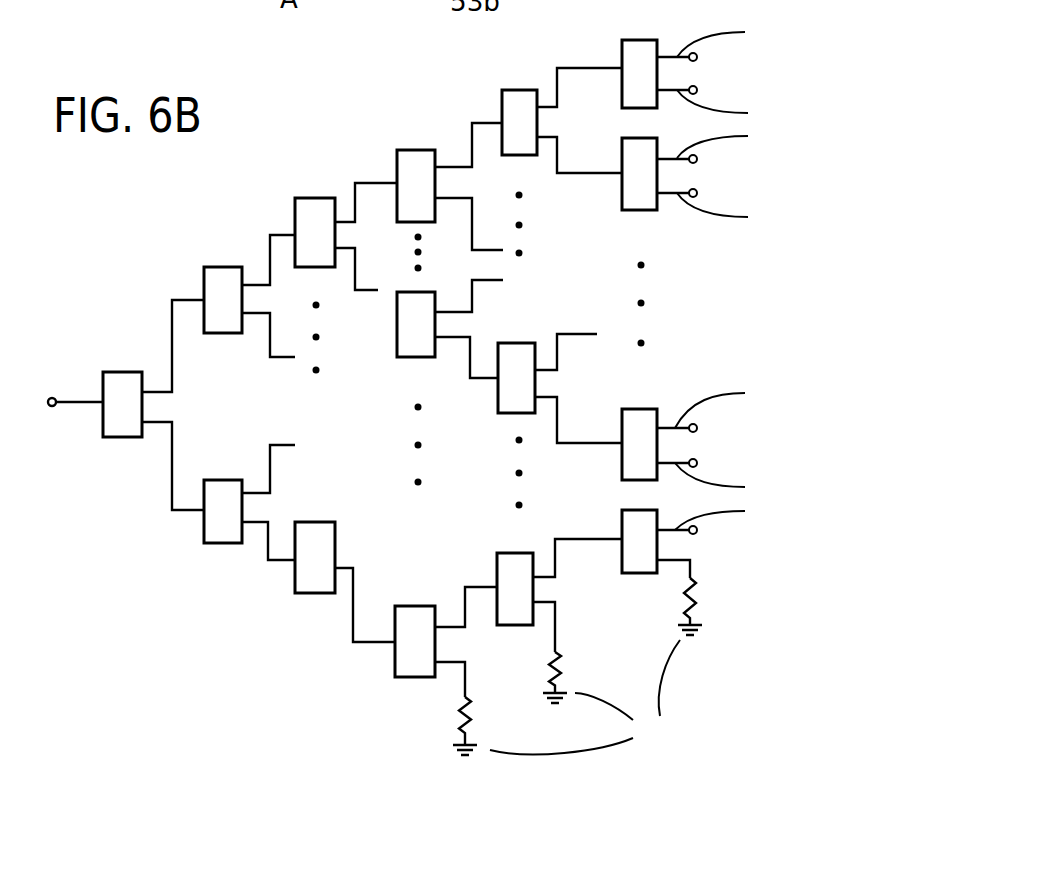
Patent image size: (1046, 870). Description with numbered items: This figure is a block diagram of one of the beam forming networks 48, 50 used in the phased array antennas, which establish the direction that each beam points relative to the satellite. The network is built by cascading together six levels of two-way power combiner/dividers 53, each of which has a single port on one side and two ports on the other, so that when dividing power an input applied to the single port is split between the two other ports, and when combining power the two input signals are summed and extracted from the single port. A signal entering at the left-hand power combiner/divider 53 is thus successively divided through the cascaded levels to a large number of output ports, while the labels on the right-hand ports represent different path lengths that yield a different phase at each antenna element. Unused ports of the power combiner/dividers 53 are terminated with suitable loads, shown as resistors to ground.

The uplink beam former 48 is at (241, 617).
The downlink beam former 50 is at (423, 377).
The power combiner/divider 53 is at (120, 372).